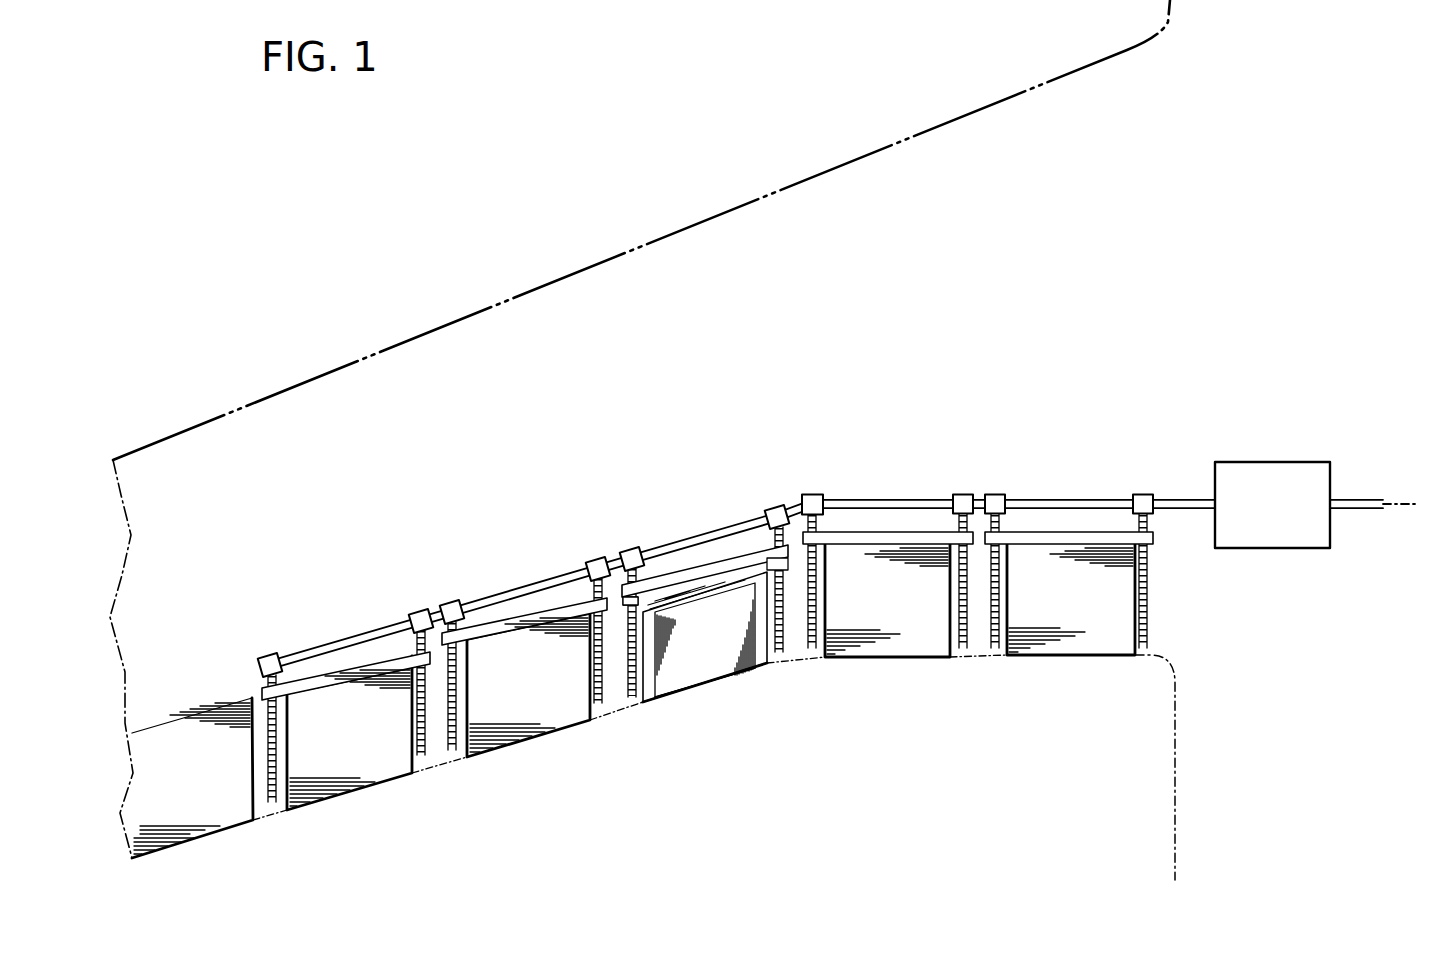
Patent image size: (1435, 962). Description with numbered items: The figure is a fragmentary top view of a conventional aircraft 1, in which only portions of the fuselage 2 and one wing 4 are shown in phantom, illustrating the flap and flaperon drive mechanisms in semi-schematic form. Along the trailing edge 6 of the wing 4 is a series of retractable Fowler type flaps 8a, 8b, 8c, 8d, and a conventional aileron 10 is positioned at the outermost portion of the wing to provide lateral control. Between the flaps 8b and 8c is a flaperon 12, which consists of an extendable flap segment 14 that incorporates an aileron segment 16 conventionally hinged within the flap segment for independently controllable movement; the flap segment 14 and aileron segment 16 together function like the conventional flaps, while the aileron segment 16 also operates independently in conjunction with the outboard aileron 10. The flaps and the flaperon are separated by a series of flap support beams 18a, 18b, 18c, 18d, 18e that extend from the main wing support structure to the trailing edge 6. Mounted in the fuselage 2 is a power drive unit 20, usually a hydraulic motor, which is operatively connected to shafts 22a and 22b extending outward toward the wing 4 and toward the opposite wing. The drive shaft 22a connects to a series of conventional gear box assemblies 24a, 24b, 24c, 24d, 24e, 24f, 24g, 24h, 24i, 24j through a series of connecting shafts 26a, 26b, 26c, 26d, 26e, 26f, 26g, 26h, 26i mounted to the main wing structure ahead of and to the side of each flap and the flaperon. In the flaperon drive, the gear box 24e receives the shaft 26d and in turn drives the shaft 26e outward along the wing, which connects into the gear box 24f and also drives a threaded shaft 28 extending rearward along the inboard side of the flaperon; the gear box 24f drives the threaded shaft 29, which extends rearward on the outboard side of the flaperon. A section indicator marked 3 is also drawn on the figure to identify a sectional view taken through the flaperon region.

The aircraft 1 is at (740, 143).
The fuselage 2 is at (744, 637).
The section line of FIG. 3 is at (755, 405).
The wing 4 is at (545, 286).
The trailing edge 6 is at (660, 702).
The retractable flap 8a is at (1065, 658).
The retractable flap 8b is at (912, 660).
The retractable flap 8c is at (546, 736).
The retractable flap 8d is at (357, 792).
The aileron 10 is at (200, 837).
The flaperon 12 is at (698, 705).
The flap segment 14 is at (768, 670).
The aileron segment 16 is at (730, 689).
The flap support beam 18a is at (998, 660).
The flap support beam 18b is at (812, 660).
The flap support beam 18c is at (632, 714).
The flap support beam 18d is at (452, 764).
The flap support beam 18e is at (263, 818).
The power drive unit 20 is at (1292, 462).
The drive shaft 22a is at (1185, 499).
The drive shaft 22b is at (1358, 498).
The gear box assembly 24a is at (1143, 495).
The gear box assembly 24b is at (997, 495).
The gear box assembly 24c is at (962, 495).
The gear box assembly 24d is at (815, 495).
The gear box assembly 24e is at (775, 505).
The gear box assembly 24f is at (630, 547).
The gear box assembly 24g is at (590, 565).
The gear box assembly 24h is at (452, 602).
The gear box assembly 24i is at (416, 611).
The gear box assembly 24j is at (266, 655).
The connecting shaft 26a is at (1085, 499).
The connecting shaft 26b is at (978, 499).
The connecting shaft 26c is at (863, 499).
The connecting shaft 26d is at (789, 500).
The connecting shaft 26e is at (700, 535).
The connecting shaft 26f is at (612, 561).
The connecting shaft 26g is at (510, 590).
The connecting shaft 26h is at (436, 612).
The connecting shaft 26i is at (330, 641).
The threaded shaft 28 is at (766, 527).
The threaded shaft 29 is at (639, 548).